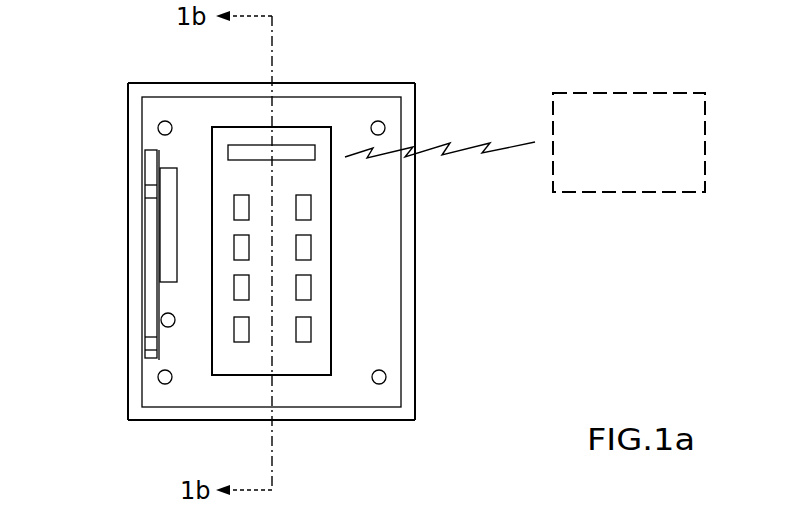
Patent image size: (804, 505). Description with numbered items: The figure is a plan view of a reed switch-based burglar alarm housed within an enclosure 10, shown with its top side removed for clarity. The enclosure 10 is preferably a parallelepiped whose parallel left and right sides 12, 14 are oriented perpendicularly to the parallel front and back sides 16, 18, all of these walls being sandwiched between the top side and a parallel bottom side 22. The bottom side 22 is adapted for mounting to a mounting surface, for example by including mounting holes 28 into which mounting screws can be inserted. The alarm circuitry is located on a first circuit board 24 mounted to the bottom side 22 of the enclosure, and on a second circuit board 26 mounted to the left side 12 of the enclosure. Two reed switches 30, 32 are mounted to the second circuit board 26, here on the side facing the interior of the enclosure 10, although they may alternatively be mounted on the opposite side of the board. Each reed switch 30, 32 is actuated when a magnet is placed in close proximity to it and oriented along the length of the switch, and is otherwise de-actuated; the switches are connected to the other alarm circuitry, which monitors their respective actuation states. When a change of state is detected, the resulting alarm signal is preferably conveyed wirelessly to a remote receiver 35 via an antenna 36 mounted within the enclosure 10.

The enclosure 10 is at (422, 25).
The left side 12 is at (128, 243).
The right side 14 is at (416, 307).
The front side 16 is at (334, 83).
The back side 18 is at (334, 413).
The bottom side 22 is at (183, 397).
The first circuit board 24 is at (320, 176).
The second circuit board 26 is at (160, 357).
The mounting holes 28 is at (163, 122).
The reed switch 30 is at (180, 190).
The reed switch 32 is at (165, 318).
The remote receiver 35 is at (622, 93).
The antenna 36 is at (296, 148).